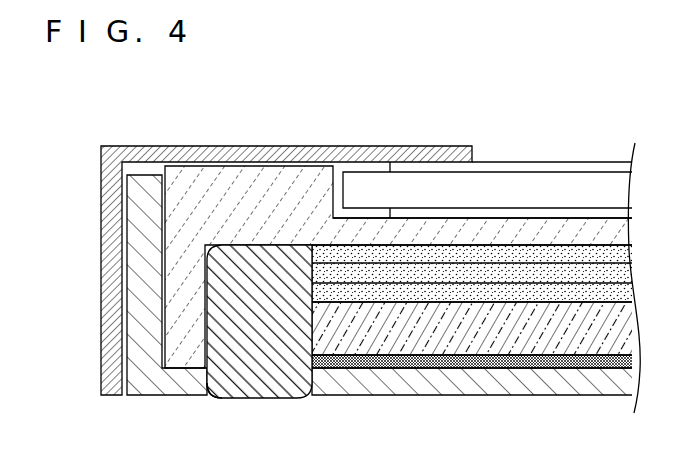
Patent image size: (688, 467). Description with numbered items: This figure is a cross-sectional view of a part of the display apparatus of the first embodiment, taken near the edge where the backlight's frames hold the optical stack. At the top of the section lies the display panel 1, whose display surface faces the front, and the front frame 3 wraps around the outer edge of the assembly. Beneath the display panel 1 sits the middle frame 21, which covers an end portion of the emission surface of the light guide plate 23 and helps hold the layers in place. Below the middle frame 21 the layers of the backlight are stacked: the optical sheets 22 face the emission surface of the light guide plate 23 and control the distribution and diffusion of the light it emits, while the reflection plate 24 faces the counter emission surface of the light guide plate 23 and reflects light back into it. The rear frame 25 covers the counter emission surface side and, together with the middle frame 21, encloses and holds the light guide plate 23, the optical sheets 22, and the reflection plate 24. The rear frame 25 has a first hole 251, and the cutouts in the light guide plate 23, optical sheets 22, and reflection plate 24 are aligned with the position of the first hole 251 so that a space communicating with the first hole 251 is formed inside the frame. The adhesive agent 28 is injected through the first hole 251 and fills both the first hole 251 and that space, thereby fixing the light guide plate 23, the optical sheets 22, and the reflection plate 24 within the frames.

The display panel 1 is at (615, 189).
The front frame 3 is at (193, 147).
The middle frame 21 is at (262, 178).
The optical sheets 22 is at (647, 245).
The light guide plate 23 is at (630, 330).
The reflection plate 24 is at (637, 360).
The rear frame 25 is at (630, 380).
The first hole 251 is at (220, 397).
The adhesive agent 28 is at (265, 385).